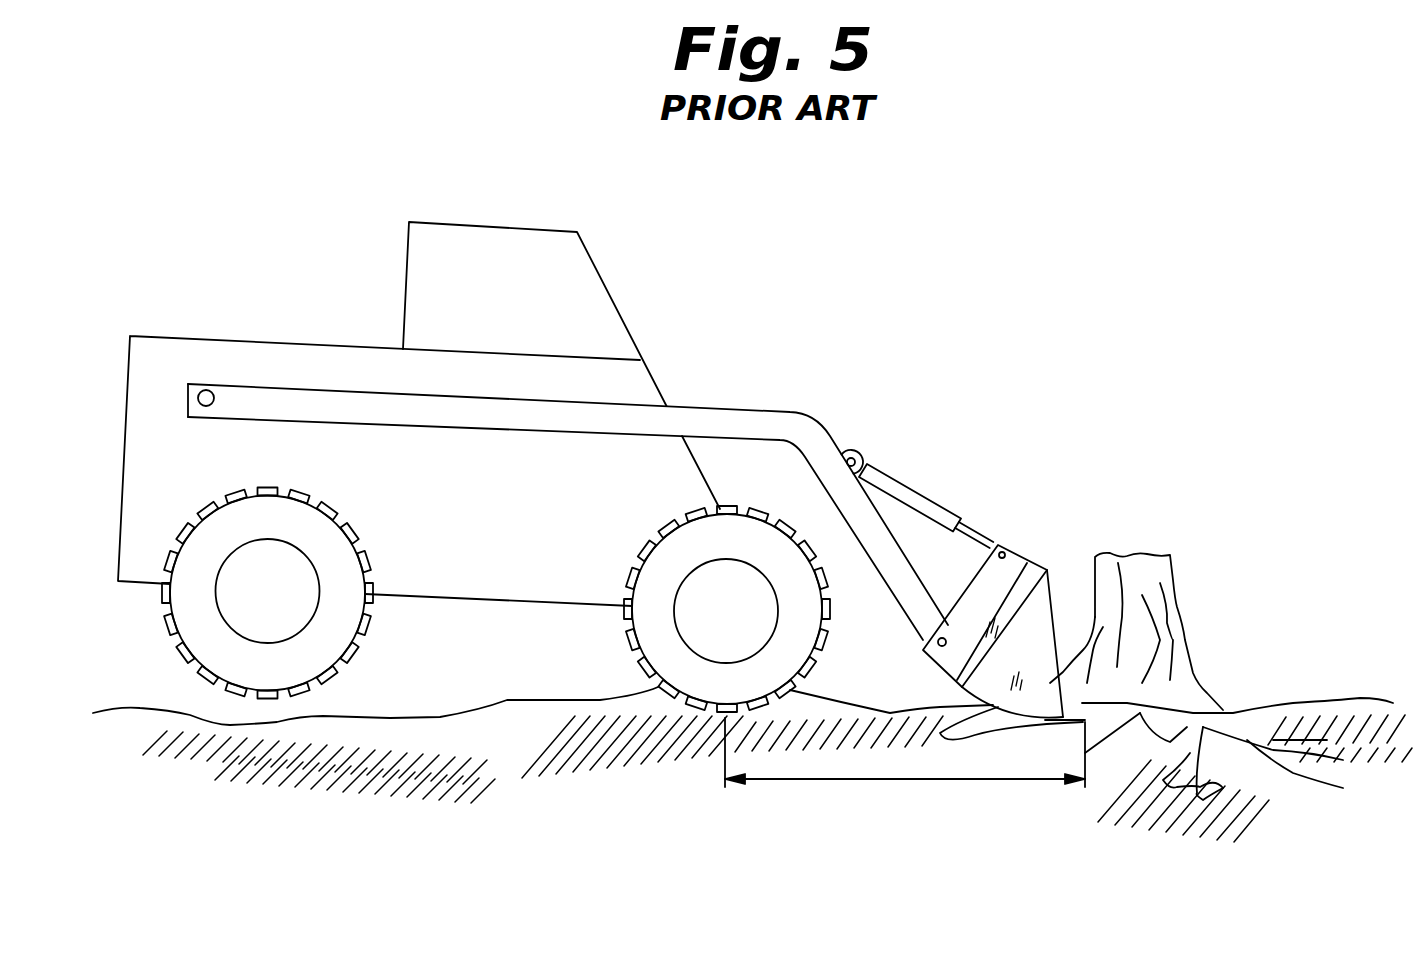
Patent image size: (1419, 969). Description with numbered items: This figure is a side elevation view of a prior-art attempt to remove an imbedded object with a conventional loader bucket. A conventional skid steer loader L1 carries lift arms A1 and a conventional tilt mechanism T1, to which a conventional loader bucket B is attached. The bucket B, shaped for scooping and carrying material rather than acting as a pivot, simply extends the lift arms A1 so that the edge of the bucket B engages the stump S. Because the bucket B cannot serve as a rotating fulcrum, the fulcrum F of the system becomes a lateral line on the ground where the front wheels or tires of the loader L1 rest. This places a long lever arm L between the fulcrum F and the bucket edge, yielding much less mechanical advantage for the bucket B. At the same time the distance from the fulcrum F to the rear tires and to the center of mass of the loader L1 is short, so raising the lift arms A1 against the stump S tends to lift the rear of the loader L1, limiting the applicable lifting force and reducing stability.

The conventional skid steer loader L1 is at (734, 280).
The lift arms A1 is at (820, 425).
The tilt mechanism T1 is at (928, 500).
The loader bucket B is at (1037, 655).
The stump S is at (1146, 648).
The fulcrum F is at (723, 722).
The lever arm L is at (915, 780).